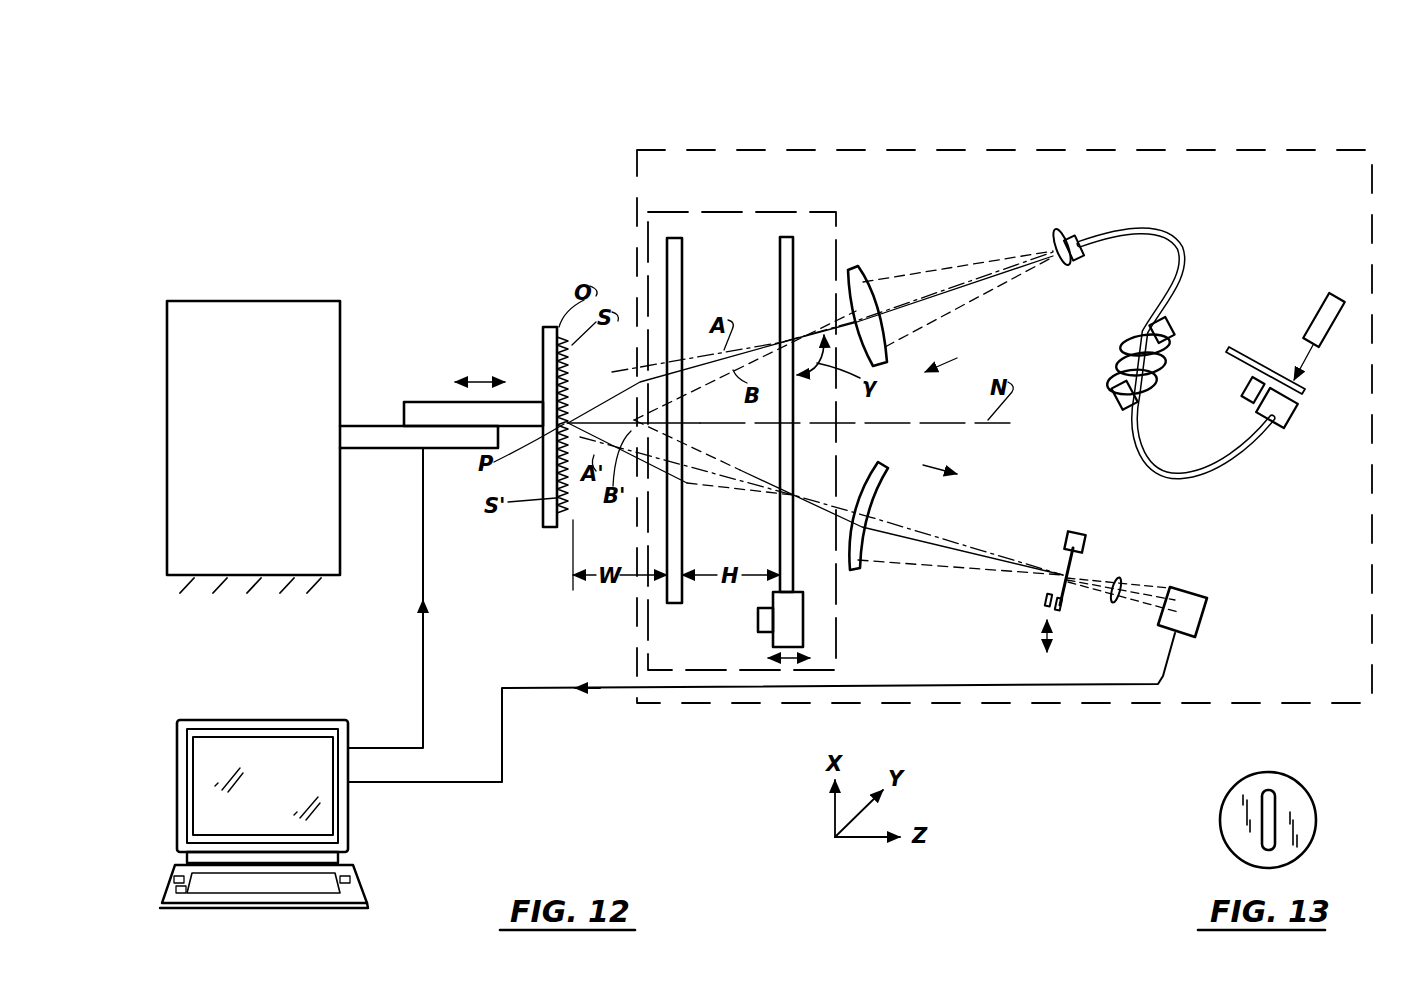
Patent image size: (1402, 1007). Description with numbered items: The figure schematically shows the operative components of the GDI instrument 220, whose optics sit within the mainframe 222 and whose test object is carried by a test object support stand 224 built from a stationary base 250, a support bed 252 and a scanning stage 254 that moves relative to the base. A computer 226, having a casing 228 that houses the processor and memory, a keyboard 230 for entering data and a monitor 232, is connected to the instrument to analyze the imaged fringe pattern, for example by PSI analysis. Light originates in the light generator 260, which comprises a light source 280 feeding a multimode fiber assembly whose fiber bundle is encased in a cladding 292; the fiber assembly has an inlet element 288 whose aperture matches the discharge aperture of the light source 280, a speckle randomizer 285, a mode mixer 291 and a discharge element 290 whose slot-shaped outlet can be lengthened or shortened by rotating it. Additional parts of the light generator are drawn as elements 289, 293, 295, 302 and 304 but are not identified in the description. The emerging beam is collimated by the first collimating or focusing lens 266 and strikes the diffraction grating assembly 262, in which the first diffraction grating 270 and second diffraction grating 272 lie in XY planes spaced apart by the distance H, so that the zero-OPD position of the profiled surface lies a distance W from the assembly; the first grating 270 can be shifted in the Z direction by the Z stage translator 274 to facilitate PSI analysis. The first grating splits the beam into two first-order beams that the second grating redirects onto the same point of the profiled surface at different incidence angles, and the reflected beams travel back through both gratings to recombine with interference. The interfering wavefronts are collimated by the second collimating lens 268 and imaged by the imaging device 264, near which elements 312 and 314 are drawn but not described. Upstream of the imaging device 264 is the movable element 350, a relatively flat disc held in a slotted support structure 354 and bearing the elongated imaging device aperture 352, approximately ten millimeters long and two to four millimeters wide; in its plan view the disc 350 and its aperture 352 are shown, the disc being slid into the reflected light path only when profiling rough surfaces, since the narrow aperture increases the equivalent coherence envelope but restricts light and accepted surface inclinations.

In FIG. 12, the GDI instrument 220 is at (1205, 82).
In FIG. 12, the mainframe 222 is at (1052, 100).
In FIG. 12, the test object support stand 224 is at (372, 420).
In FIG. 12, the computer 226 is at (225, 784).
In FIG. 12, the casing 228 is at (187, 858).
In FIG. 12, the keyboard 230 is at (162, 897).
In FIG. 12, the monitor 232 is at (177, 768).
In FIG. 12, the stationary base 250 is at (282, 268).
In FIG. 12, the support bed 252 is at (548, 327).
In FIG. 12, the scanning stage 254 is at (416, 402).
In FIG. 12, the light generator 260 is at (1230, 258).
In FIG. 12, the diffraction grating assembly 262 is at (836, 210).
In FIG. 12, the imaging device 264 is at (1212, 627).
In FIG. 12, the first collimating or focusing lens 266 is at (858, 268).
In FIG. 12, the second collimating lens 268 is at (852, 565).
In FIG. 12, the first diffraction grating 270 is at (786, 237).
In FIG. 12, the second diffraction grating 272 is at (672, 238).
In FIG. 12, the Z stage translator 274 is at (803, 632).
In FIG. 12, the light source 280 is at (1318, 302).
In FIG. 12, the speckle randomizer 285 is at (1244, 350).
In FIG. 12, the inlet element 288 is at (1290, 413).
In FIG. 12, the coupling lens 289 is at (1246, 401).
In FIG. 12, the discharge element 290 is at (1083, 240).
In FIG. 12, the mode mixer 291 is at (1168, 378).
In FIG. 12, the cladding 292 is at (1185, 250).
In FIG. 12, the fiber coils 293 is at (1112, 372).
In FIG. 12, the fiber clamp 295 is at (1122, 398).
In FIG. 12, the fiber connector 302 is at (1077, 238).
In FIG. 12, the collimating lens 304 is at (1058, 242).
In FIG. 12, the photodetector 312 is at (1205, 600).
In FIG. 12, the focusing lens 314 is at (1120, 584).
In FIG. 12, the movable element 350 is at (1073, 572).
In FIG. 13, the movable element 350 is at (1298, 788).
In FIG. 13, the elongated imaging device aperture 352 is at (1268, 815).
In FIG. 12, the slotted support structure 354 is at (1080, 538).